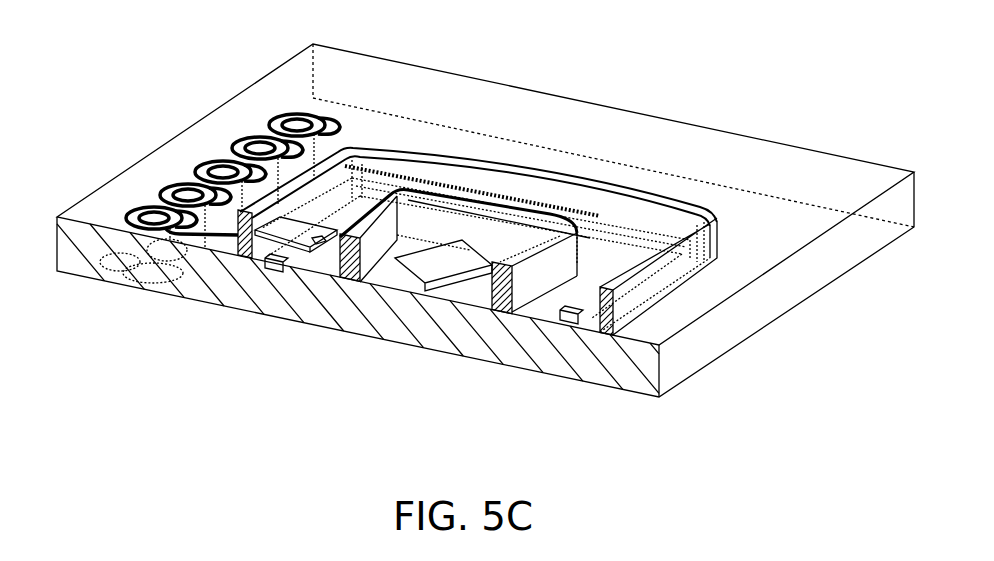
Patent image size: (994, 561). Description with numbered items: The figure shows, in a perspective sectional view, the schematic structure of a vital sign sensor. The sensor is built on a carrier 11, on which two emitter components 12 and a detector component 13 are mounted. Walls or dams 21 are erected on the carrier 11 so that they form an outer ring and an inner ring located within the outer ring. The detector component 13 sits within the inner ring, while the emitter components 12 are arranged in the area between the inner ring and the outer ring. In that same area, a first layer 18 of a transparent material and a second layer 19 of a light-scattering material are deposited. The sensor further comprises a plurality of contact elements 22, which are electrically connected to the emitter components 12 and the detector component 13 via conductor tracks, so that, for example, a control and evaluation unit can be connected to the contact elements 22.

The carrier 11 is at (84, 213).
The contact elements 22 is at (232, 145).
The walls or dams 21 is at (677, 208).
The detector component 13 is at (446, 275).
The first layer 18 is at (306, 255).
The second layer 19 is at (318, 247).
The emitter components 12 is at (277, 268).